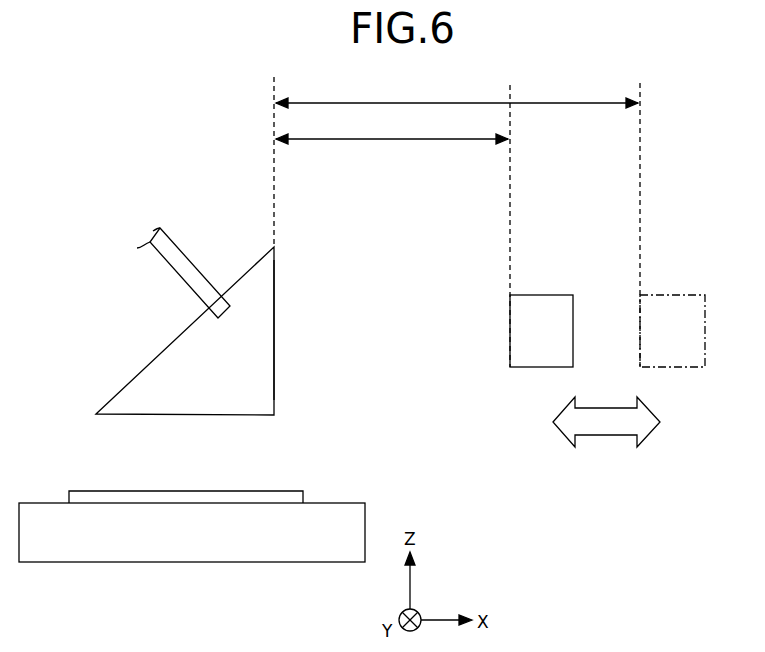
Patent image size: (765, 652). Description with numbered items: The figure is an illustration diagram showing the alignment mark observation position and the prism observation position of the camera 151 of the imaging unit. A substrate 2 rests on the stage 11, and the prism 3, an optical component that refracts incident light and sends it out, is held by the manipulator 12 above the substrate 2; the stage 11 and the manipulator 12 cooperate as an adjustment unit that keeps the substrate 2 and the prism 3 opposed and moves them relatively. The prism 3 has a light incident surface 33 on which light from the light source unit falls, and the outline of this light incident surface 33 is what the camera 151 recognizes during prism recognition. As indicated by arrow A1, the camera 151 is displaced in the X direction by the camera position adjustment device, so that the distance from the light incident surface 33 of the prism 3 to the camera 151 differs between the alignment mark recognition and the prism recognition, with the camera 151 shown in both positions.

The substrate 2 is at (264, 491).
The prism 3 is at (275, 265).
The stage 11 is at (337, 503).
The manipulator 12 is at (183, 250).
The light incident surface 33 is at (275, 318).
The camera 151 is at (555, 295).
The arrow A1 is at (606, 437).